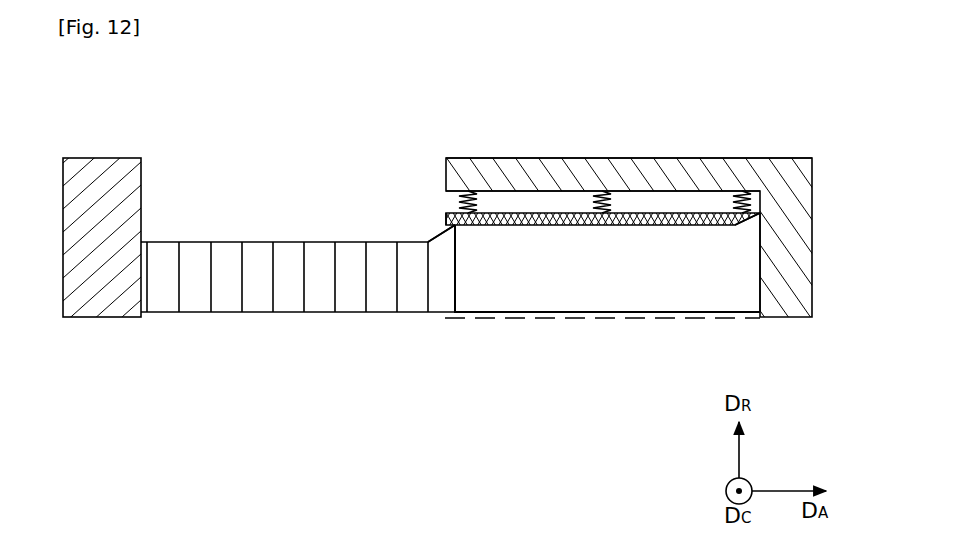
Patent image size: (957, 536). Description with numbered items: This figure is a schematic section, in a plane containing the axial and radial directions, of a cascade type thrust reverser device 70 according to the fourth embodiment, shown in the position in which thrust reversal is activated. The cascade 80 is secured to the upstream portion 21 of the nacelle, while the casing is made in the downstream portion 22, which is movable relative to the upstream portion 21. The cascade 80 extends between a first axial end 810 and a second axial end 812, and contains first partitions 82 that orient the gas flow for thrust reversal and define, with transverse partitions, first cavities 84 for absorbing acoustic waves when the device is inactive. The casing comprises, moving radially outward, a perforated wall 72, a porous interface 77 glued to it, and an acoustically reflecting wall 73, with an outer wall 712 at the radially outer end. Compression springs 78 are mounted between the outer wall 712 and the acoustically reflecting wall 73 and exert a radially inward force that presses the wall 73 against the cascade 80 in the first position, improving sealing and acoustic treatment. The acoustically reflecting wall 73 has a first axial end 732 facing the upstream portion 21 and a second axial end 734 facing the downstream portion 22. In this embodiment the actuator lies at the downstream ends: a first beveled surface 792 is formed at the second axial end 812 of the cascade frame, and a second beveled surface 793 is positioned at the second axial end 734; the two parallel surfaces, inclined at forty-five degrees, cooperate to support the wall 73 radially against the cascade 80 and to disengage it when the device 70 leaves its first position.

The downstream portion 22 is at (110, 158).
The cascade 80 is at (283, 238).
The first cavities 84 is at (223, 285).
The first partitions 82 is at (268, 292).
The first axial end 810 is at (151, 323).
The second axial end 812 is at (433, 323).
The thrust reverser device 70 is at (719, 138).
The upstream portion 21 is at (577, 158).
The outer wall 712 is at (722, 188).
The compression springs 78 is at (478, 190).
The acoustically reflecting wall 73 is at (510, 213).
The first axial end 732 is at (442, 215).
The first beveled surface 792 is at (452, 226).
The second beveled surface 793 is at (749, 227).
The second axial end 734 is at (763, 246).
The porous interface 77 is at (651, 298).
The perforated wall 72 is at (708, 318).